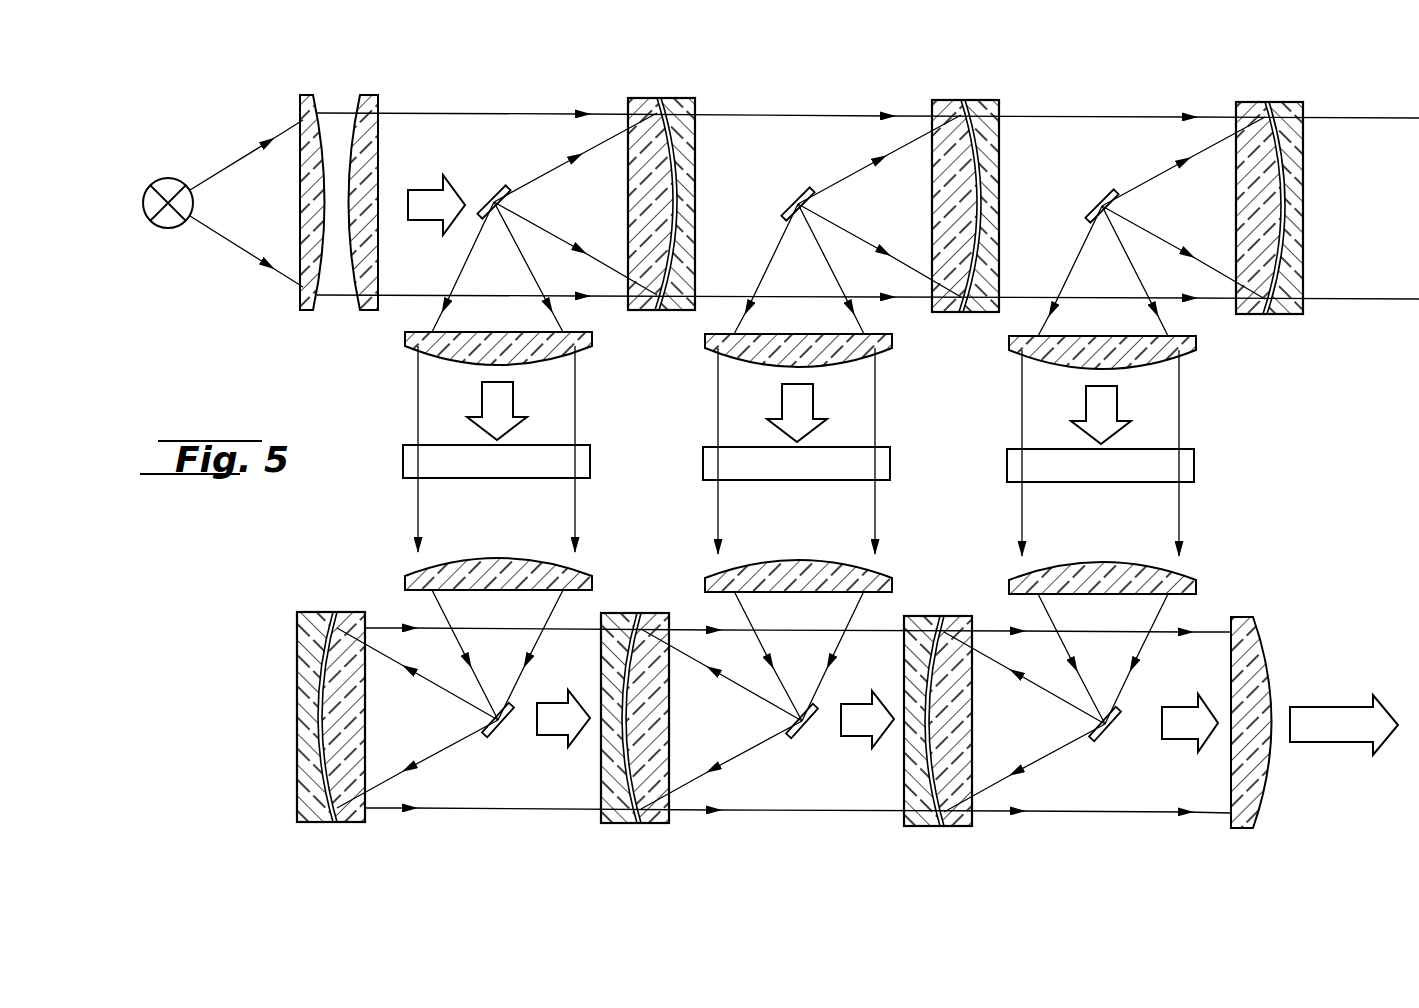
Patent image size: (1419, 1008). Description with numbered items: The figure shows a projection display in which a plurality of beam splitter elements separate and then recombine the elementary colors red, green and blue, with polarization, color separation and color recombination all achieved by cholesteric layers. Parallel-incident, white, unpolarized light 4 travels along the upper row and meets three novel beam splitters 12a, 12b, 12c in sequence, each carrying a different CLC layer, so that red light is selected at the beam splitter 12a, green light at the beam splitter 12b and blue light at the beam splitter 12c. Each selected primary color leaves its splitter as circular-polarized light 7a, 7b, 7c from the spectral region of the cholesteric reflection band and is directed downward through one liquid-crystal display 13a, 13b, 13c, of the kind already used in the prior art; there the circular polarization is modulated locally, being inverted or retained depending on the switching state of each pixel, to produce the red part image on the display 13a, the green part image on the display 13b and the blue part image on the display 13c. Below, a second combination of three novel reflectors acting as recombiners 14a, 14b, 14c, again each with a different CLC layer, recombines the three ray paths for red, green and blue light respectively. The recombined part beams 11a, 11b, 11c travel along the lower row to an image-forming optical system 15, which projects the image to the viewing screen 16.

The parallel-incident white unpolarized light 4 is at (436, 197).
The circular-polarized red light 7a is at (508, 411).
The circular-polarized green light 7b is at (809, 413).
The circular-polarized blue light 7c is at (1112, 415).
The recombined red part beam 11a is at (559, 731).
The recombined green part beam 11b is at (863, 732).
The recombined blue part beam 11c is at (1185, 735).
The beam splitter for red light 12a is at (583, 95).
The beam splitter for green light 12b is at (905, 100).
The beam splitter for blue light 12c is at (1200, 100).
The liquid-crystal display for the red part image 13a is at (588, 463).
The liquid-crystal display for the green part image 13b is at (890, 465).
The liquid-crystal display for the blue part image 13c is at (1194, 467).
The recombiner for red light 14a is at (416, 829).
The recombiner for green light 14b is at (720, 829).
The recombiner for blue light 14c is at (1000, 829).
The image-forming optical system 15 is at (1243, 832).
The projection of the image to the viewing screen 16 is at (1344, 737).